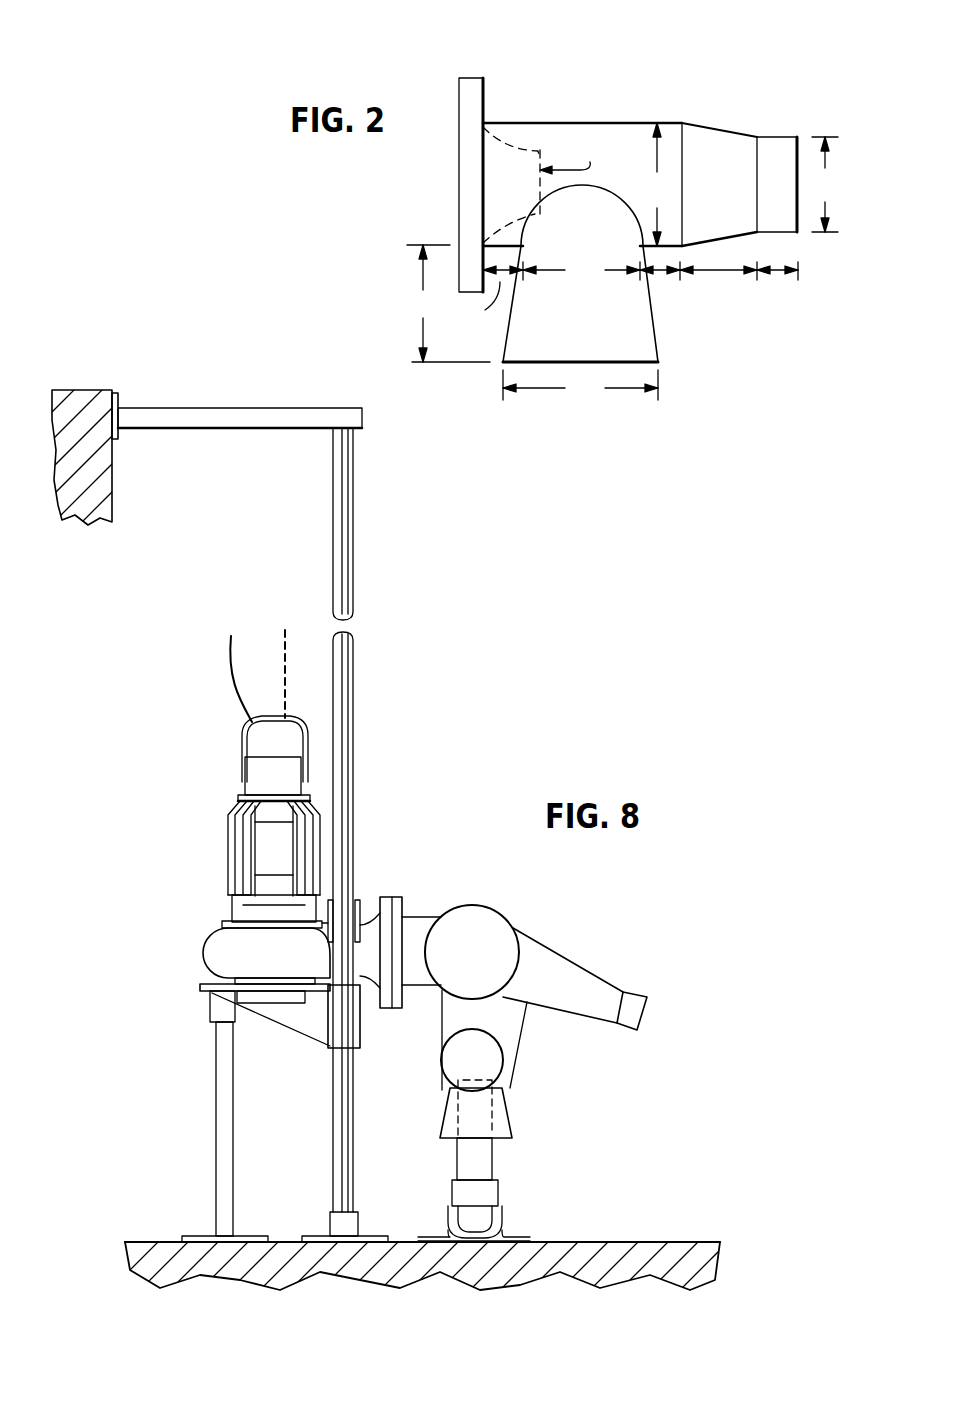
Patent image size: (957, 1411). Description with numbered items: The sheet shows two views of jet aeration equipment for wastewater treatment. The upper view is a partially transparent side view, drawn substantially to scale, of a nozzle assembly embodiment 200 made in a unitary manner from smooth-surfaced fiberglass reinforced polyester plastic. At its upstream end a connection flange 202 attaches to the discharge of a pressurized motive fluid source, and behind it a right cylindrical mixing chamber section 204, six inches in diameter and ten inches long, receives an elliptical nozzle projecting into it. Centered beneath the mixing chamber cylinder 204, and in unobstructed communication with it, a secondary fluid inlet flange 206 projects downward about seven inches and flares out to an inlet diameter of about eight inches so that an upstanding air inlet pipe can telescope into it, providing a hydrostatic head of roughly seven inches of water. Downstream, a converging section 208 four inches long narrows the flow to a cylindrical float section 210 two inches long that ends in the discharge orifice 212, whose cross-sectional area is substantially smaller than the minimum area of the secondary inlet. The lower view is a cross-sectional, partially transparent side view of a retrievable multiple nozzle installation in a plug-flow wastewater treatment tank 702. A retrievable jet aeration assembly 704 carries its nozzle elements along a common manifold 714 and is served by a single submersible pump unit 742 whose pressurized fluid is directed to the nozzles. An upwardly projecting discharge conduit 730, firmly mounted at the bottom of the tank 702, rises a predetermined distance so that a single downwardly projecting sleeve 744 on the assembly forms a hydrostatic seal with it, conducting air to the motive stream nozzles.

In FIG. 2, the nozzle assembly embodiment 200 is at (655, 45).
In FIG. 2, the connection flange 202 is at (459, 94).
In FIG. 2, the right cylindrical mixing chamber section 204 is at (640, 122).
In FIG. 2, the secondary fluid inlet flange 206 is at (660, 342).
In FIG. 2, the converging section 208 is at (722, 135).
In FIG. 2, the cylindrical float section 210 is at (780, 140).
In FIG. 2, the discharge orifice 212 is at (805, 152).
In FIG. 8, the wastewater treatment tank 702 is at (573, 1240).
In FIG. 8, the retrievable jet aeration assembly 704 is at (420, 925).
In FIG. 8, the common manifold 714 is at (512, 1024).
In FIG. 8, the upwardly projecting discharge conduit 730 is at (483, 1162).
In FIG. 8, the submersible pump unit 742 is at (212, 948).
In FIG. 8, the downwardly projecting sleeve 744 is at (510, 1112).